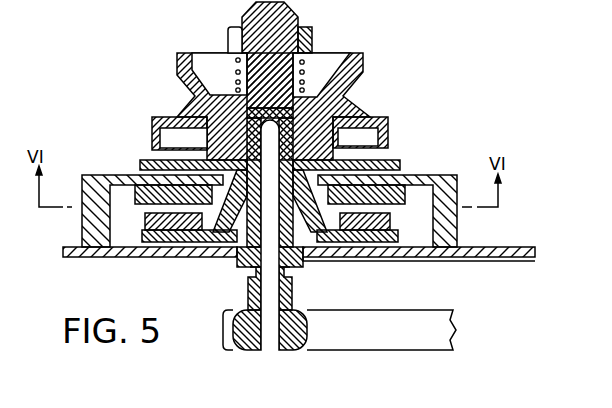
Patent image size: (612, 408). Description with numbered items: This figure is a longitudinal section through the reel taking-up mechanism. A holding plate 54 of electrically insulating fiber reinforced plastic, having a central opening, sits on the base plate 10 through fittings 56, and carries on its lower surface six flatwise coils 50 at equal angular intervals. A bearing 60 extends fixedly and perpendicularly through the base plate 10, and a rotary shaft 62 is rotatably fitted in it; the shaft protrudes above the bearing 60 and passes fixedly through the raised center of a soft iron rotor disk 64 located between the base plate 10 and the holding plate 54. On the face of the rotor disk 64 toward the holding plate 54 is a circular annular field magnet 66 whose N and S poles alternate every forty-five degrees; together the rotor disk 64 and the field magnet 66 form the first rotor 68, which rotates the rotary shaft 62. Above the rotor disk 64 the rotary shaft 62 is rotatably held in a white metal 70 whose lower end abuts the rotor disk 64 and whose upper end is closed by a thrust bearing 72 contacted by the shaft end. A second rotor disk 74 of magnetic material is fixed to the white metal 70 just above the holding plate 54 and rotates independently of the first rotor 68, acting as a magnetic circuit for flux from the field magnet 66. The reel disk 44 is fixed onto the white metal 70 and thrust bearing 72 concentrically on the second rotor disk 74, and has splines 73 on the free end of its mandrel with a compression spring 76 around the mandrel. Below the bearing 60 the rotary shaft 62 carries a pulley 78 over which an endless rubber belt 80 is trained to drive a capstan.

The base plate 10 is at (487, 257).
The reel disk 44 is at (345, 94).
The flatwise coils 50 is at (405, 169).
The holding plate 54 is at (309, 185).
The fittings 56 is at (455, 229).
The bearing 60 is at (248, 259).
The rotary shaft 62 is at (271, 254).
The rotor disk 64 is at (345, 243).
The field magnet 66 is at (382, 232).
The first rotor 68 is at (418, 230).
The white metal 70 is at (176, 139).
The thrust bearing 72 is at (248, 106).
The splines 73 is at (313, 43).
The second rotor disk 74 is at (389, 120).
The compression spring 76 is at (236, 80).
The pulley 78 is at (270, 343).
The endless rubber belt 80 is at (455, 328).